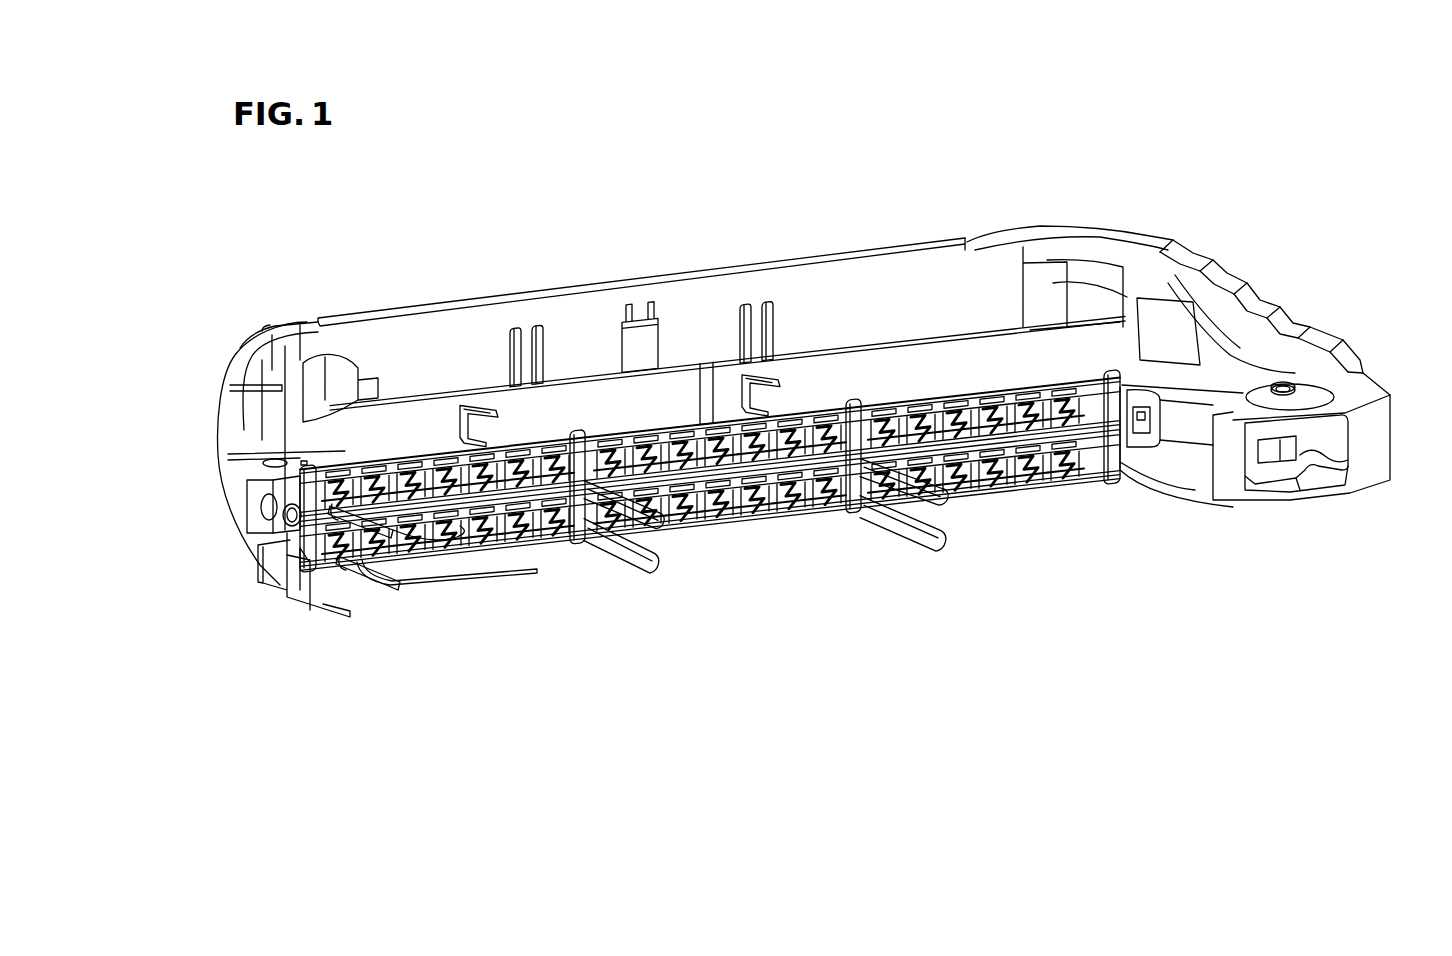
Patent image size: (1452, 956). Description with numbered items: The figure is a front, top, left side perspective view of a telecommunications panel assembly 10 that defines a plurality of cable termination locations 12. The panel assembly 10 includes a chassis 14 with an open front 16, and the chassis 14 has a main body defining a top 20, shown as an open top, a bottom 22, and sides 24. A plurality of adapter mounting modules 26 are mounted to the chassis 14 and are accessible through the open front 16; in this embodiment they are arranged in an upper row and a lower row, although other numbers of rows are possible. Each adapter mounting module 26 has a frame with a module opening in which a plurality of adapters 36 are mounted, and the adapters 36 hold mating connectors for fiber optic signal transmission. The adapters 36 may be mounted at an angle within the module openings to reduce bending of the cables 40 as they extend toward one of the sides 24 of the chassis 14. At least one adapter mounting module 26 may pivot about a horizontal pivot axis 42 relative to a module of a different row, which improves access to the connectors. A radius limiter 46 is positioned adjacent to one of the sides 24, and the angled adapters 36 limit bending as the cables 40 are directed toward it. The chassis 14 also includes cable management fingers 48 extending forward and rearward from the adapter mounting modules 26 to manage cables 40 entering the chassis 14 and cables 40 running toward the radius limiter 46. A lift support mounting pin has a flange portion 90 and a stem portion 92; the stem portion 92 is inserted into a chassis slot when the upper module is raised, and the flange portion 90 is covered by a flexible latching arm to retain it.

The telecommunications panel assembly 10 is at (916, 226).
The cable termination locations 12 is at (791, 517).
The chassis 14 is at (368, 325).
The open front 16 is at (1040, 511).
The top 20 is at (695, 304).
The bottom 22 is at (610, 580).
The sides 24 is at (1338, 323).
The adapter mounting modules 26 is at (416, 462).
The adapters 36 is at (541, 478).
The cables 40 is at (440, 590).
The pivot axis 42 is at (254, 510).
The radius limiter 46 is at (1313, 492).
The cable management fingers 48 is at (942, 532).
The flange portion 90 is at (285, 522).
The stem portion 92 is at (289, 524).